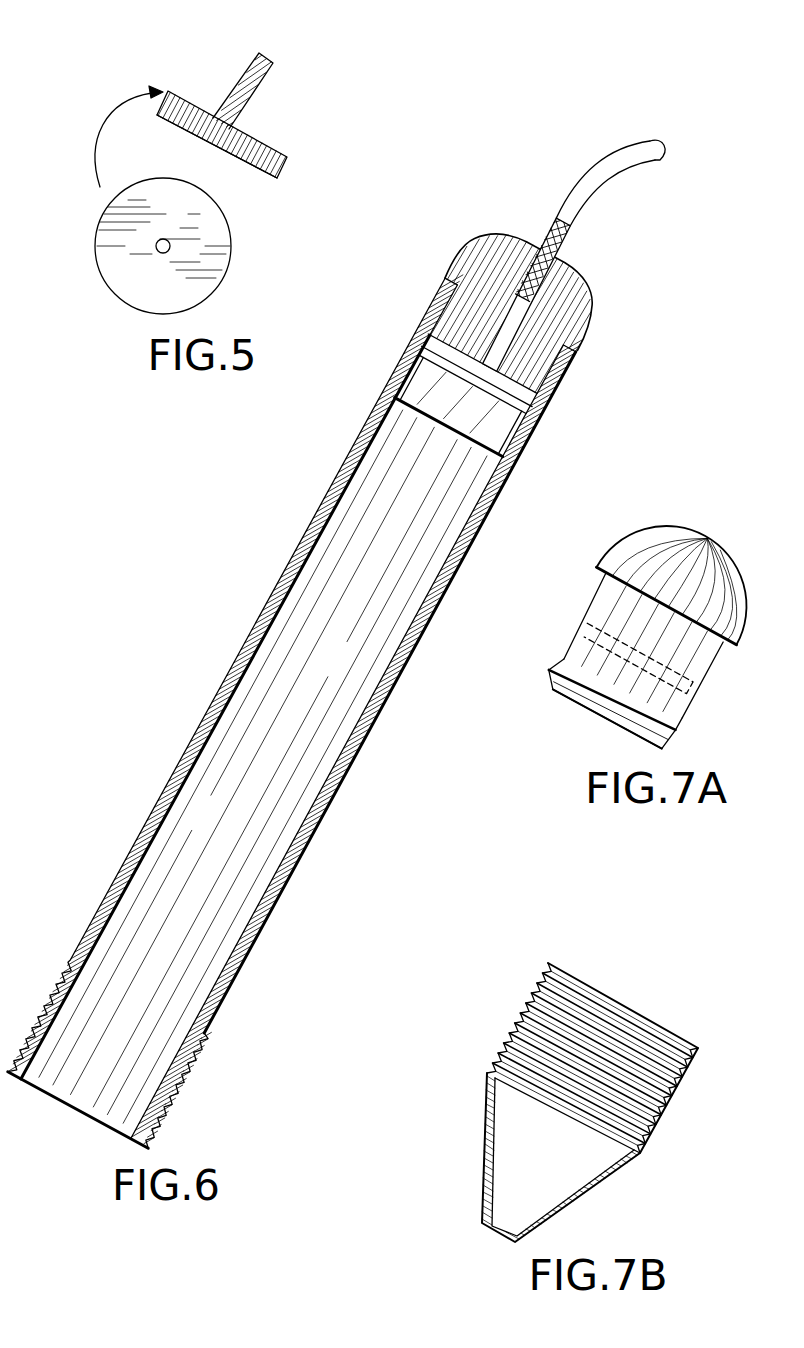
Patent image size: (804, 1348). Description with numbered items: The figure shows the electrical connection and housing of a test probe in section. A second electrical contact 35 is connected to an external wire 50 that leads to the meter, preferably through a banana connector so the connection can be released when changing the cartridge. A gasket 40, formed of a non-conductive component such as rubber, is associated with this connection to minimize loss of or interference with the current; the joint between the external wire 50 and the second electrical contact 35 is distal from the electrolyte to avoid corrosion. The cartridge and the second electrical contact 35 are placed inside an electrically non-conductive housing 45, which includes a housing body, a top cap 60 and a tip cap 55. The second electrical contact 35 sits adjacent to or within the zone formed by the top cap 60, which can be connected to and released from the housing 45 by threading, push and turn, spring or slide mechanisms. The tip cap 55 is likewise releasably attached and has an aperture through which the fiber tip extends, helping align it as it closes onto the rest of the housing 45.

In FIG. 5, the second electrical contact 35 is at (252, 157).
In FIG. 6, the second electrical contact 35 is at (432, 350).
In FIG. 5, the gasket 40 is at (182, 92).
In FIG. 6, the gasket 40 is at (445, 343).
In FIG. 6, the housing 45 is at (248, 627).
In FIG. 5, the external wire 50 is at (248, 82).
In FIG. 6, the external wire 50 is at (573, 208).
In FIG. 7B, the tip cap 55 is at (600, 1188).
In FIG. 7A, the top cap 60 is at (677, 552).